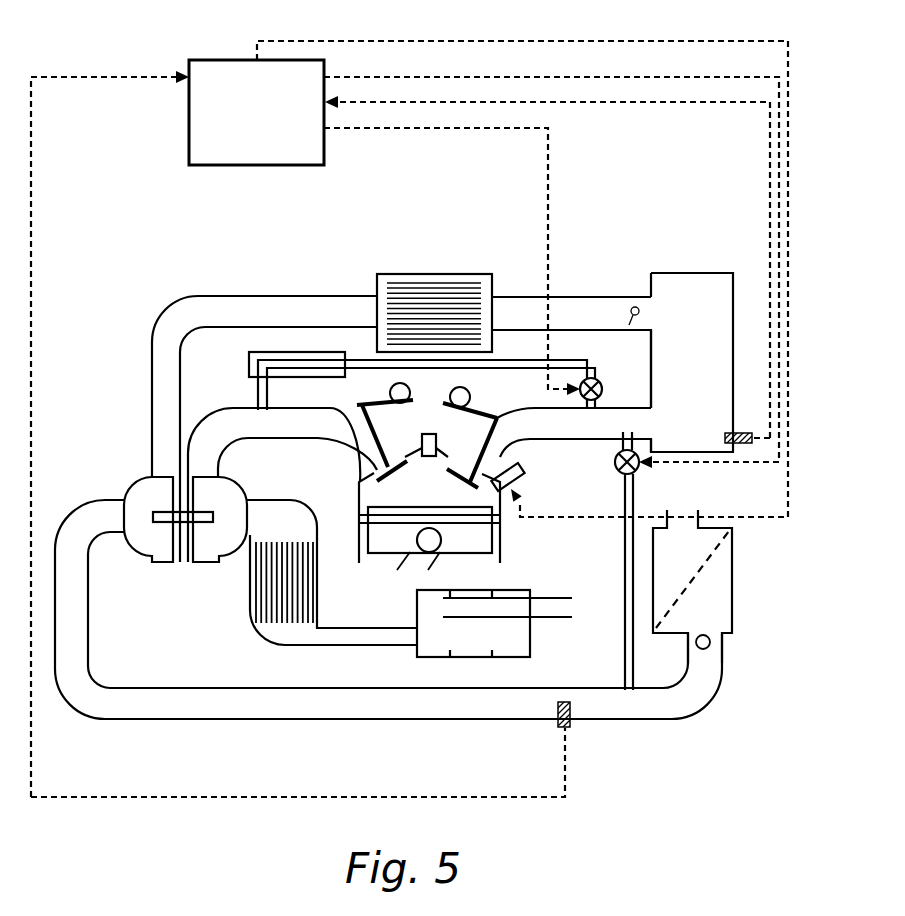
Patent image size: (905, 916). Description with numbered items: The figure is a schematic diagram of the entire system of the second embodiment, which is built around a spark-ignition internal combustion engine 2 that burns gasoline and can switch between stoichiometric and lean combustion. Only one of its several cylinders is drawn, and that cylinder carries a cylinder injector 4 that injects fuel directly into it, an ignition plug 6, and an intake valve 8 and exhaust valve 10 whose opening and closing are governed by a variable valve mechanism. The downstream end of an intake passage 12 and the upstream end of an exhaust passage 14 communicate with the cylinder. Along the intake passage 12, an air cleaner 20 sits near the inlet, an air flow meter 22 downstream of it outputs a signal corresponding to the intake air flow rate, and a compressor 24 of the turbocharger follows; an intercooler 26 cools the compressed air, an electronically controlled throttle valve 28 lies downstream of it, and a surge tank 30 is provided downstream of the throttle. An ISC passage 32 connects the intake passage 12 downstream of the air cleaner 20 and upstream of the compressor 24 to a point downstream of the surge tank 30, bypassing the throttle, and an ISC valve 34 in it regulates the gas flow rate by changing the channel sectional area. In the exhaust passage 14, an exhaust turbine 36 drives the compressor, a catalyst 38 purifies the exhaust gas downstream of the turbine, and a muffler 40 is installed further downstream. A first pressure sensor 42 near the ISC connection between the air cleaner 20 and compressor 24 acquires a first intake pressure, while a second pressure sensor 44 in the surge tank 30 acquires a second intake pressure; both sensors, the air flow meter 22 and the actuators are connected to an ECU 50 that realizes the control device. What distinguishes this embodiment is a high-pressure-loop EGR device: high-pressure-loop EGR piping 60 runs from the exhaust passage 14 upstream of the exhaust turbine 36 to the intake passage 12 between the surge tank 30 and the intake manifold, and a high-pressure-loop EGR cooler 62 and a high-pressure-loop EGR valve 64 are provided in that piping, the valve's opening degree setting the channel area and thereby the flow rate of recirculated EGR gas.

The internal combustion engine 2 is at (515, 548).
The cylinder injector 4 is at (527, 478).
The ignition plug 6 is at (437, 437).
The intake valve 8 is at (514, 447).
The exhaust valve 10 is at (377, 432).
The intake passage 12 is at (300, 296).
The exhaust passage 14 is at (325, 442).
The air cleaner 20 is at (733, 585).
The air flow meter 22 is at (711, 642).
The compressor 24 is at (157, 538).
The intercooler 26 is at (434, 274).
The throttle valve 28 is at (636, 306).
The surge tank 30 is at (697, 273).
The ISC passage 32 is at (636, 490).
The ISC valve 34 is at (611, 476).
The exhaust turbine 36 is at (203, 550).
The catalyst 38 is at (307, 588).
The muffler 40 is at (524, 641).
The first pressure sensor 42 is at (572, 725).
The second pressure sensor 44 is at (742, 432).
The ECU 50 is at (218, 58).
The high-pressure-loop EGR piping 60 is at (513, 359).
The high-pressure-loop EGR cooler 62 is at (336, 350).
The high-pressure-loop EGR valve 64 is at (604, 390).